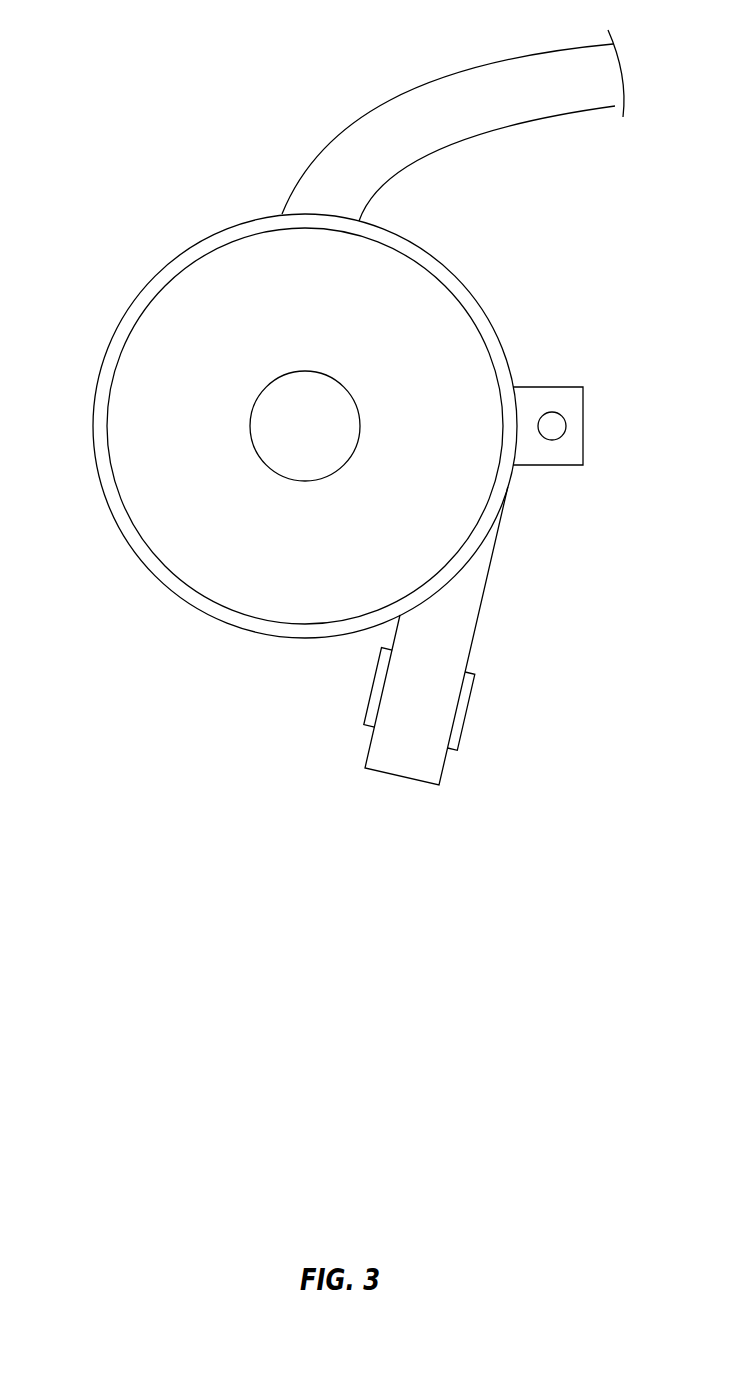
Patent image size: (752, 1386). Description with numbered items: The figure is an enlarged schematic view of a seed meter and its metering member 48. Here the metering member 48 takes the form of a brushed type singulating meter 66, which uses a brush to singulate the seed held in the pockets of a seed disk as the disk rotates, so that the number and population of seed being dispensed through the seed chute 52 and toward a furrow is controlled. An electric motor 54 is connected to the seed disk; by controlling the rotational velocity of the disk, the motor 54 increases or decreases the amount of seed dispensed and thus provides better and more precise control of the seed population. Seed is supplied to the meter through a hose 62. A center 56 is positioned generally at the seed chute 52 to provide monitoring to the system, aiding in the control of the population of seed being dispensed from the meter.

The metering member 48 is at (334, 407).
The seed chute 52 is at (460, 636).
The electric motor 54 is at (565, 385).
The center 56 is at (468, 710).
The hose 62 is at (488, 65).
The brushed type singulating meter 66 is at (110, 350).